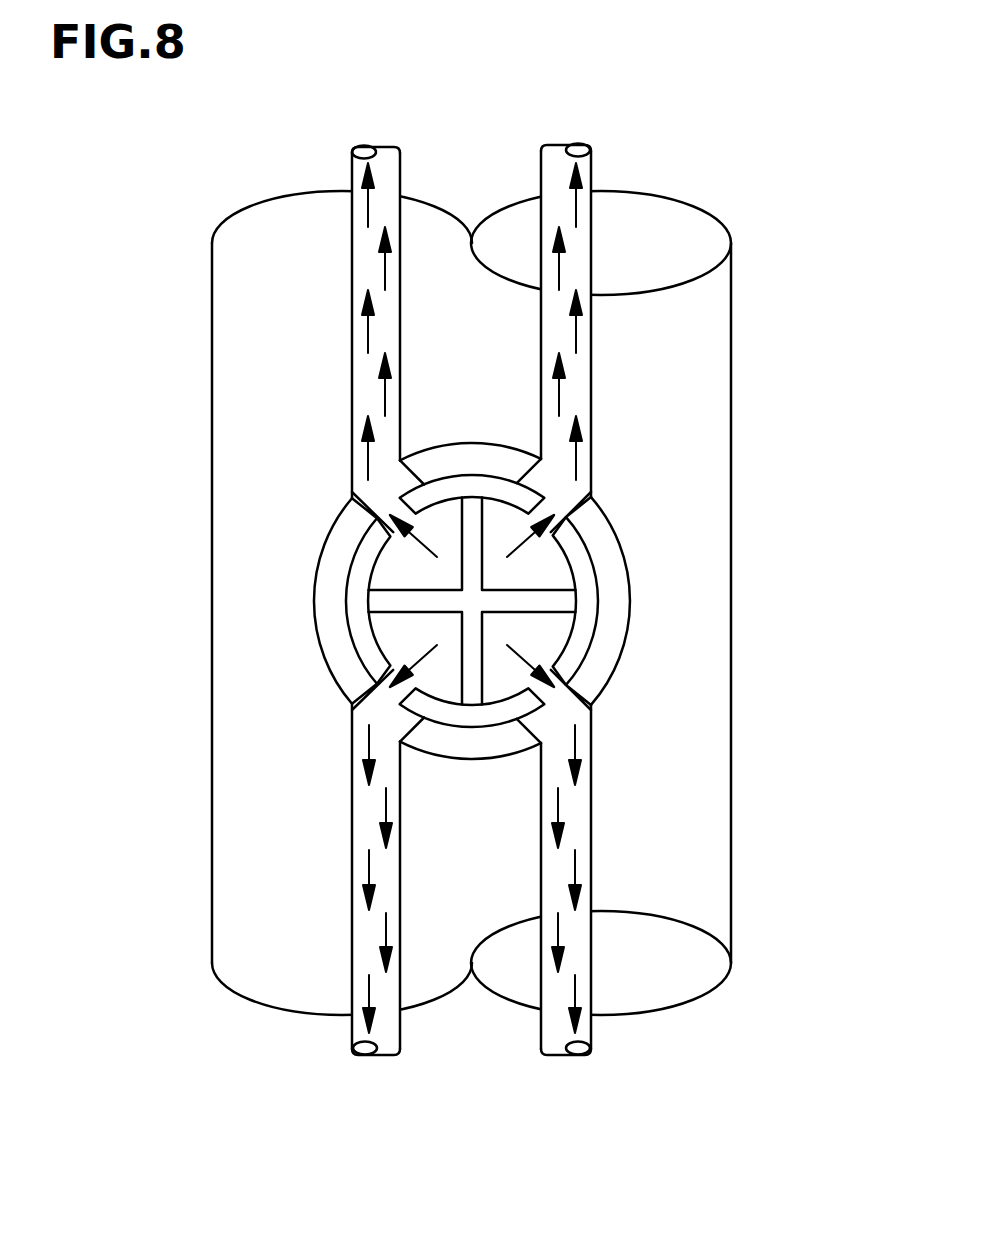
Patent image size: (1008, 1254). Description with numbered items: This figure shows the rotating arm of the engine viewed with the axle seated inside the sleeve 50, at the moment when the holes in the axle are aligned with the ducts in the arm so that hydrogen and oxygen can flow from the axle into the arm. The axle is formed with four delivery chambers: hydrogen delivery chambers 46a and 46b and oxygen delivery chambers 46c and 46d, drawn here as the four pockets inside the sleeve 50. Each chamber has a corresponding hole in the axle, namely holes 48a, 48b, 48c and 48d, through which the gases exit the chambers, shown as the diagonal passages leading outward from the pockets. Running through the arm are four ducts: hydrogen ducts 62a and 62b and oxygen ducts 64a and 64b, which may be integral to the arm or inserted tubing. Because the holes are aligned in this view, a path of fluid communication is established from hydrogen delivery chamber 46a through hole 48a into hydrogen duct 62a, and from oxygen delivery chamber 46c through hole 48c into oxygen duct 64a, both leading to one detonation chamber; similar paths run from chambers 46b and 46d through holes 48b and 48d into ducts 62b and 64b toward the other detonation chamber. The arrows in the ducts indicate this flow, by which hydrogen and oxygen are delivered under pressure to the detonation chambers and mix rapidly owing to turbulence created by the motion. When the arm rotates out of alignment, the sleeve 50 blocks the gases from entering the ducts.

The sleeve 50 is at (333, 610).
The hydrogen delivery chamber 46a is at (549, 568).
The hydrogen delivery chamber 46b is at (551, 632).
The oxygen delivery chamber 46c is at (393, 568).
The oxygen delivery chamber 46d is at (393, 633).
The hole 48a is at (592, 488).
The hole 48b is at (592, 712).
The hole 48c is at (353, 485).
The hole 48d is at (353, 712).
The hydrogen duct 62a is at (574, 277).
The hydrogen duct 62b is at (574, 922).
The oxygen duct 64a is at (370, 277).
The oxygen duct 64b is at (370, 922).